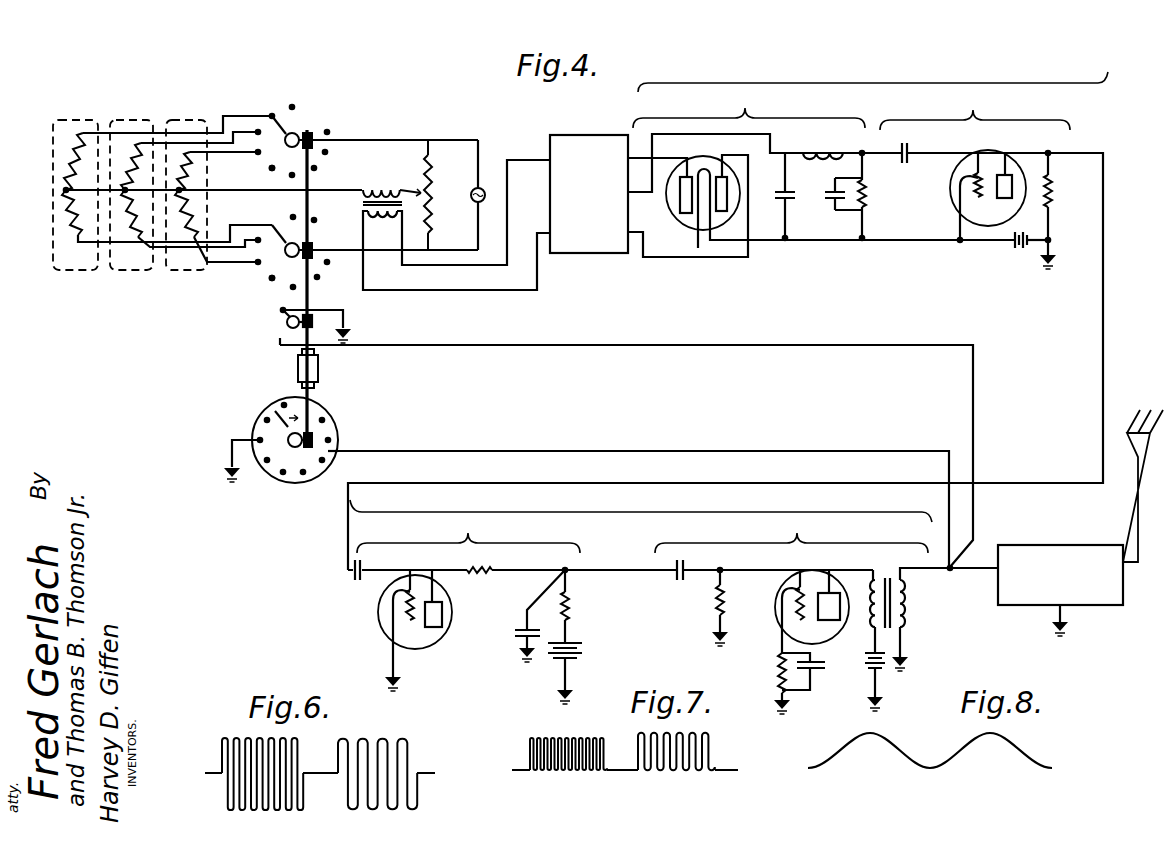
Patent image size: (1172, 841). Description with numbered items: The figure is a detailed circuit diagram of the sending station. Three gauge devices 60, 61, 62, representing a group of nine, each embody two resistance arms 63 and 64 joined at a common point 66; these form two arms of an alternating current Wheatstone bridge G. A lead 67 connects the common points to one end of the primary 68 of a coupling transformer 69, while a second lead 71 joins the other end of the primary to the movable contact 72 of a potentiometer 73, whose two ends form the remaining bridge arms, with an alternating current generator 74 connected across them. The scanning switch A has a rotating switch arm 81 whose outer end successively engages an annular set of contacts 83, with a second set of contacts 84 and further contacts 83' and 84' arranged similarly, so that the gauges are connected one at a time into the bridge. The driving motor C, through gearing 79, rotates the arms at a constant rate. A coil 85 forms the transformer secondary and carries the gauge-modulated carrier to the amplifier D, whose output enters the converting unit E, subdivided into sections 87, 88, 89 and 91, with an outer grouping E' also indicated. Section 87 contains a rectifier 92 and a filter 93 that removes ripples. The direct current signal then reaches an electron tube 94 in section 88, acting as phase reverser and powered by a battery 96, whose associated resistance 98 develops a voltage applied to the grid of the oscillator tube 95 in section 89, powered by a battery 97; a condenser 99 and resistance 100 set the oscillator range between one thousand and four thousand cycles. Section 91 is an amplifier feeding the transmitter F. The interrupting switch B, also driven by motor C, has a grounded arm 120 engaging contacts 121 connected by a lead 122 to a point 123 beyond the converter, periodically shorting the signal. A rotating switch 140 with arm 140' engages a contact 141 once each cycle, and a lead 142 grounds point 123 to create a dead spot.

The gauge device 60 is at (180, 121).
The gauge device 61 is at (133, 121).
The gauge device 62 is at (78, 121).
The resistance arm 63 is at (74, 155).
The resistance arm 64 is at (72, 228).
The common point 66 is at (70, 189).
The lead 67 is at (236, 192).
The primary 68 is at (376, 188).
The coupling transformer 69 is at (406, 208).
The second lead 71 is at (414, 192).
The movable contact 72 is at (421, 186).
The potentiometer 73 is at (436, 183).
The alternating current generator 74 is at (471, 199).
The gearing 79 is at (305, 130).
The rotating switch arm 81 is at (290, 118).
The contact set 83 is at (301, 129).
The stationary contact 83' is at (249, 173).
The contact set 84 is at (306, 247).
The stationary contact 84' is at (253, 287).
The coil 85 is at (383, 223).
The section 87 is at (749, 110).
The section 88 is at (975, 109).
The section 89 is at (468, 536).
The section 91 is at (791, 534).
The rectifier 92 is at (677, 229).
The filter 93 is at (827, 179).
The electron tube 94 is at (955, 202).
The electron tube 95 is at (450, 612).
The battery 96 is at (1020, 247).
The battery 97 is at (582, 648).
The resistance 98 is at (1052, 195).
The condenser 99 is at (521, 627).
The resistance 100 is at (573, 606).
The arm 120 is at (274, 422).
The contacts 121 is at (284, 478).
The lead 122 is at (713, 450).
The point 123 is at (950, 572).
The rotating switch 140 is at (338, 326).
The rotating switch arm 140' is at (262, 314).
The contact 141 is at (280, 338).
The lead 142 is at (680, 344).
The scanning switch A is at (312, 185).
The interrupting switch B is at (336, 405).
The driving motor C is at (330, 374).
The amplifier D is at (578, 132).
The converting unit E is at (641, 508).
The amplifier unit E' is at (878, 70).
The transmitter F is at (1047, 544).
The Wheatstone bridge G is at (396, 137).